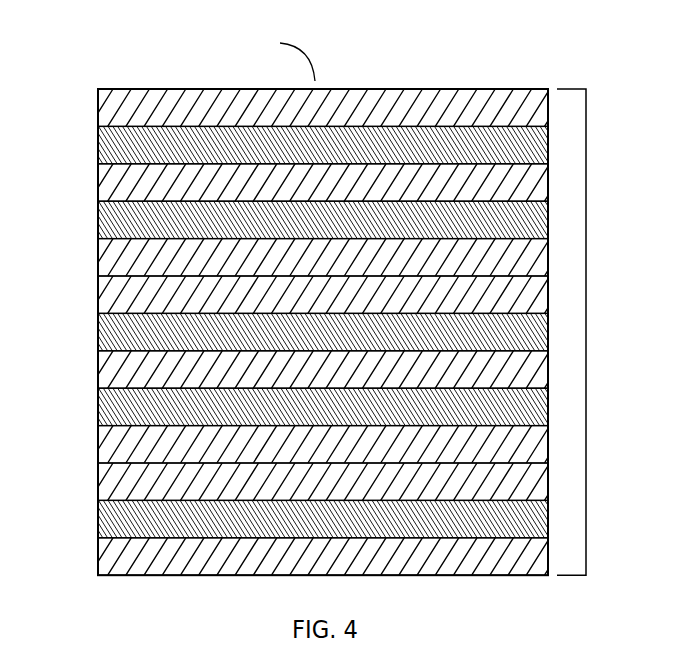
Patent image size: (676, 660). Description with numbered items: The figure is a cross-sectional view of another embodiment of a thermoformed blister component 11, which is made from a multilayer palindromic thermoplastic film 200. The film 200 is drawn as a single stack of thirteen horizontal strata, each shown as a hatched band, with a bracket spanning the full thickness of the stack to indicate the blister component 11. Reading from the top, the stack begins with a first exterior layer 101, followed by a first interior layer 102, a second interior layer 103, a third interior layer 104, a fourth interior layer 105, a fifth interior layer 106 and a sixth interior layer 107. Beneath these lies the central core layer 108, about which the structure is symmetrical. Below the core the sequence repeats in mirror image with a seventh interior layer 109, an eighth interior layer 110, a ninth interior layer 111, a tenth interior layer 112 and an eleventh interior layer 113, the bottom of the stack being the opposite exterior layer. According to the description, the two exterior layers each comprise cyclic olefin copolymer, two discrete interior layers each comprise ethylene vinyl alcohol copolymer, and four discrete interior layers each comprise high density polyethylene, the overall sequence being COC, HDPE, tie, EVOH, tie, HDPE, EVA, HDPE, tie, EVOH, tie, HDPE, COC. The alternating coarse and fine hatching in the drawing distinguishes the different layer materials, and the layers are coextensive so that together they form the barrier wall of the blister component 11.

The multilayer palindromic thermoplastic film 200 is at (265, 42).
The thermoformed blister component 11 is at (586, 329).
The first exterior layer 101 is at (98, 108).
The first interior layer 102 is at (98, 145).
The second interior layer 103 is at (98, 182).
The third interior layer 104 is at (98, 220).
The fourth interior layer 105 is at (98, 257).
The fifth interior layer 106 is at (98, 295).
The sixth interior layer 107 is at (98, 332).
The central core layer 108 is at (98, 370).
The seventh interior layer 109 is at (98, 407).
The eighth interior layer 110 is at (98, 444).
The ninth interior layer 111 is at (98, 482).
The tenth interior layer 112 is at (98, 519).
The eleventh interior layer 113 is at (98, 556).